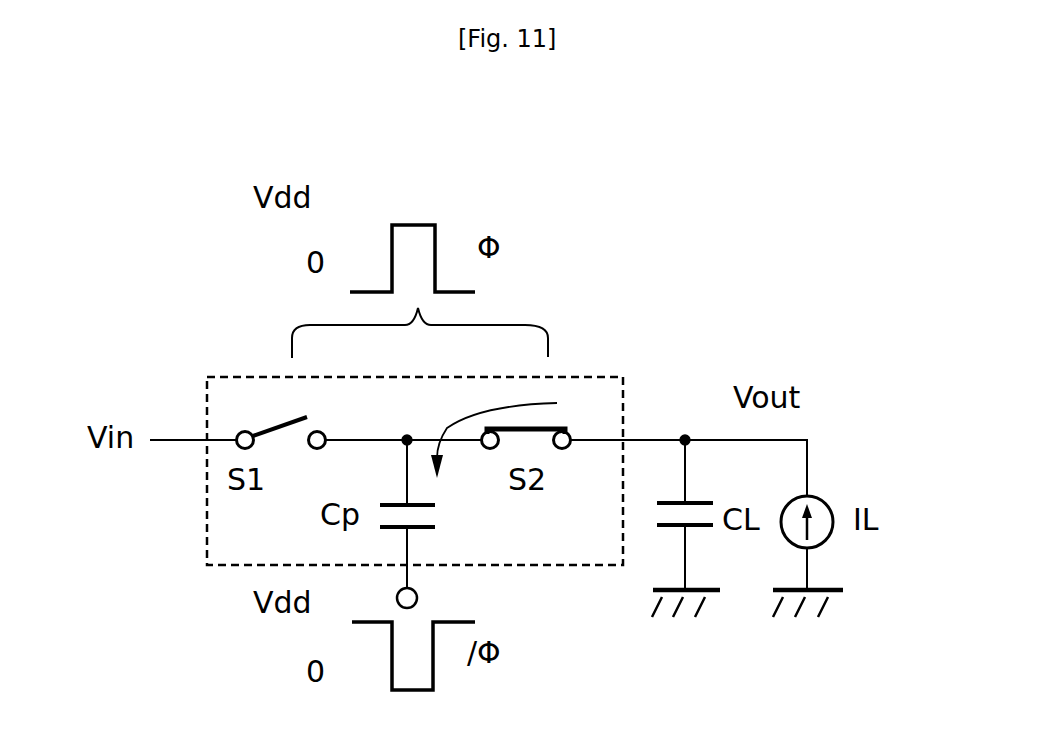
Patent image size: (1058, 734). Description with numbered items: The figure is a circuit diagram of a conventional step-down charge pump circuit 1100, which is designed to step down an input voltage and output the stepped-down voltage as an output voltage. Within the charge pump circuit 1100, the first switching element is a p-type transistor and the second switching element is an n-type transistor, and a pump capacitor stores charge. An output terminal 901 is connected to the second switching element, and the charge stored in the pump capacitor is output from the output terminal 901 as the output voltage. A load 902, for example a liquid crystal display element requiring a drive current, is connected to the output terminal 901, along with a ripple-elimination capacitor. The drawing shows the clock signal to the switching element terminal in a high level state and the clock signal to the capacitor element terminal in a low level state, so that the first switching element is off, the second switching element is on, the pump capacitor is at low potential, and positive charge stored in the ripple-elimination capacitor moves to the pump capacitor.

The charge pump circuit 1100 is at (233, 375).
The output terminal 901 is at (685, 437).
The load 902 is at (820, 495).